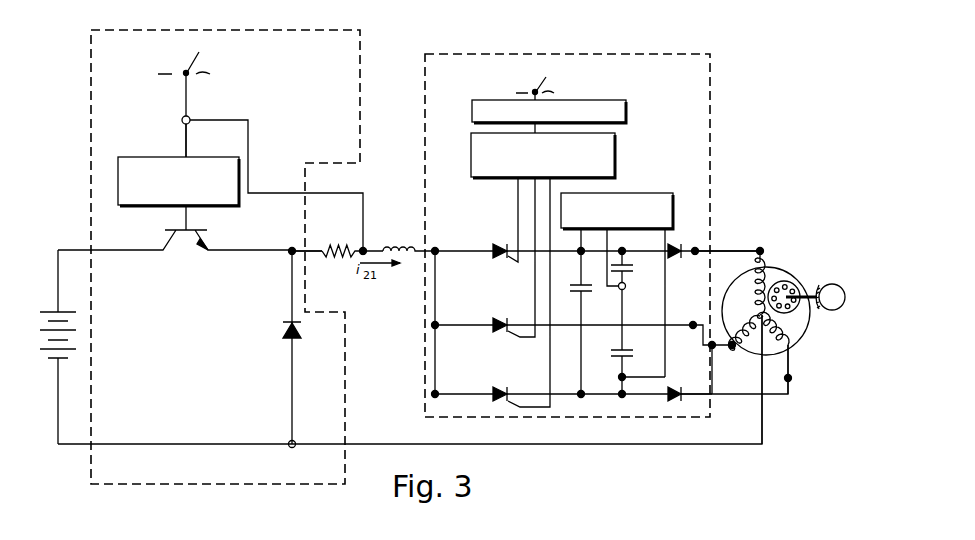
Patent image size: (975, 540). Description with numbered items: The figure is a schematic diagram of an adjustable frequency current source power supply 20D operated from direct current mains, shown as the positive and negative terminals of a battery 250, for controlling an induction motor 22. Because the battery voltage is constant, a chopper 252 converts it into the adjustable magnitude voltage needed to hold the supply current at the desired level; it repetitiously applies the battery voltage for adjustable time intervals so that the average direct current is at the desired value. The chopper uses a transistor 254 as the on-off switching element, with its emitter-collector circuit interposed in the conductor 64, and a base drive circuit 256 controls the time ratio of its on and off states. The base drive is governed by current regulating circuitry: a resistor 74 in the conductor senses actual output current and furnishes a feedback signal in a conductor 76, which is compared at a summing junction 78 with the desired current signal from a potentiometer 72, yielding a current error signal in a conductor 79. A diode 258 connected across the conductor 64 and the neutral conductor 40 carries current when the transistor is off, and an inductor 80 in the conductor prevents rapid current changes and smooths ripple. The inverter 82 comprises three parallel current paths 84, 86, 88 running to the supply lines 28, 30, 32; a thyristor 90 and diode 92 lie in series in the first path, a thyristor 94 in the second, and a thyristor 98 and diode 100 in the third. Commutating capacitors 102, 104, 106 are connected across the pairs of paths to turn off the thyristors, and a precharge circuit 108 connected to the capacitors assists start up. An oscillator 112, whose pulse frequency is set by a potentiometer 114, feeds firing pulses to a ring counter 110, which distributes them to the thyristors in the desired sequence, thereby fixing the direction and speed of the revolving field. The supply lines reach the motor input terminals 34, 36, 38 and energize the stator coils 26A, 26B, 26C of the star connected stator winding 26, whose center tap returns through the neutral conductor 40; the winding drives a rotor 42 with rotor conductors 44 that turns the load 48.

The current source power supply 20D is at (416, 137).
The induction motor 22 is at (786, 268).
The stator winding 26 is at (772, 309).
The stator coil 26A is at (772, 266).
The stator coil 26B is at (748, 316).
The stator coil 26C is at (788, 378).
The supply line 28 is at (726, 239).
The supply line 30 is at (714, 350).
The supply line 32 is at (723, 402).
The motor input terminal 34 is at (758, 253).
The motor input terminal 36 is at (712, 370).
The motor input terminal 38 is at (790, 402).
The neutral conductor 40 is at (383, 442).
The rotor 42 is at (790, 345).
The rotor conductors 44 is at (800, 292).
The load 48 is at (832, 310).
The conductor 64 is at (306, 252).
The potentiometer 72 is at (202, 73).
The resistor 74 is at (337, 246).
The conductor 76 is at (249, 142).
The summing junction 78 is at (191, 116).
The conductor 79 is at (189, 144).
The inductor 80 is at (392, 246).
The inverter 82 is at (712, 132).
The current path 84 is at (448, 248).
The current path 86 is at (448, 321).
The current path 88 is at (442, 390).
The thyristor 90 is at (502, 239).
The diode 92 is at (680, 257).
The thyristor 94 is at (502, 324).
The thyristor 98 is at (502, 393).
The diode 100 is at (678, 391).
The capacitor 102 is at (632, 275).
The capacitor 104 is at (612, 345).
The capacitor 106 is at (591, 278).
The precharge circuit 108 is at (636, 187).
The ring counter 110 is at (619, 146).
The oscillator 112 is at (629, 115).
The potentiometer 114 is at (550, 84).
The battery 250 is at (52, 301).
The chopper 252 is at (362, 87).
The transistor 254 is at (200, 250).
The base drive circuit 256 is at (141, 157).
The diode 258 is at (280, 330).